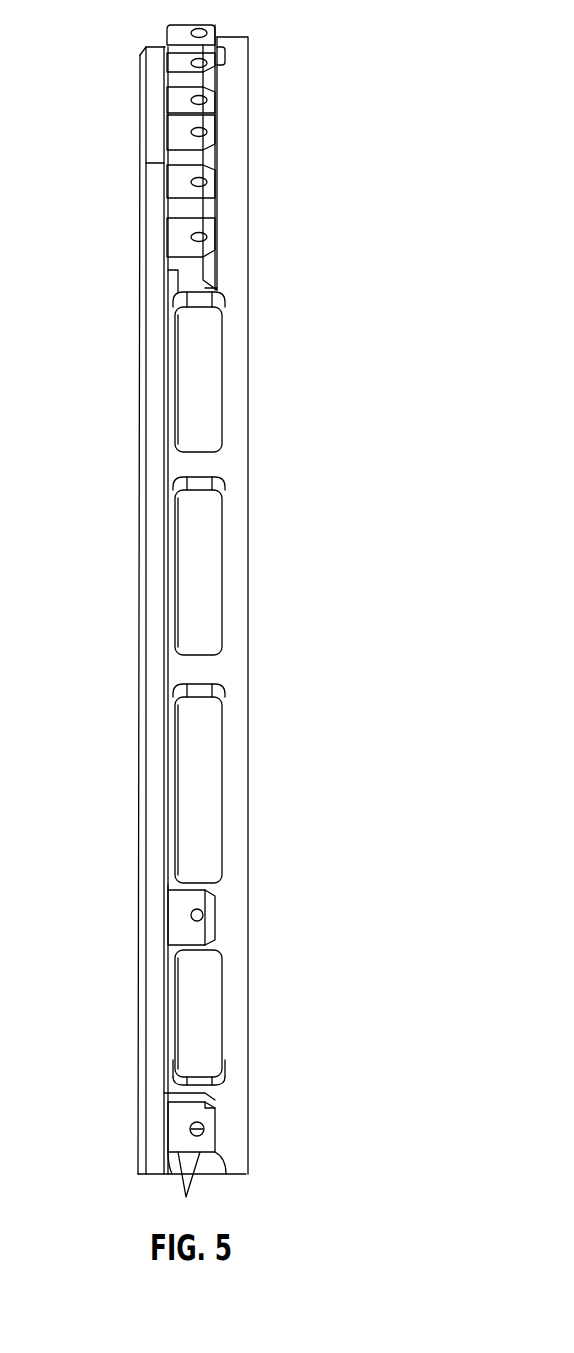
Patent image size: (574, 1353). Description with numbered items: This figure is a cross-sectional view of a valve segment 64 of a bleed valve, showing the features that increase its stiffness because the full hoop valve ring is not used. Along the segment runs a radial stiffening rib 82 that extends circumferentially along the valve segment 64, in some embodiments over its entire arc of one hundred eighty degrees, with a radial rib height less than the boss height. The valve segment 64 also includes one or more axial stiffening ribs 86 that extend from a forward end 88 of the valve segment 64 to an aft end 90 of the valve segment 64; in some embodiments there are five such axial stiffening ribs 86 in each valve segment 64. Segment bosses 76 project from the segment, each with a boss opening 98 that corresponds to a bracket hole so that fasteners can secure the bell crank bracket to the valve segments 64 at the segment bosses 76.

The valve segment 64 is at (352, 46).
The segment boss 76 is at (162, 243).
The radial stiffening rib 82 is at (158, 480).
The axial stiffening rib 86 is at (197, 480).
The forward end 88 is at (142, 590).
The aft end 90 is at (230, 317).
The boss opening 98 is at (207, 65).